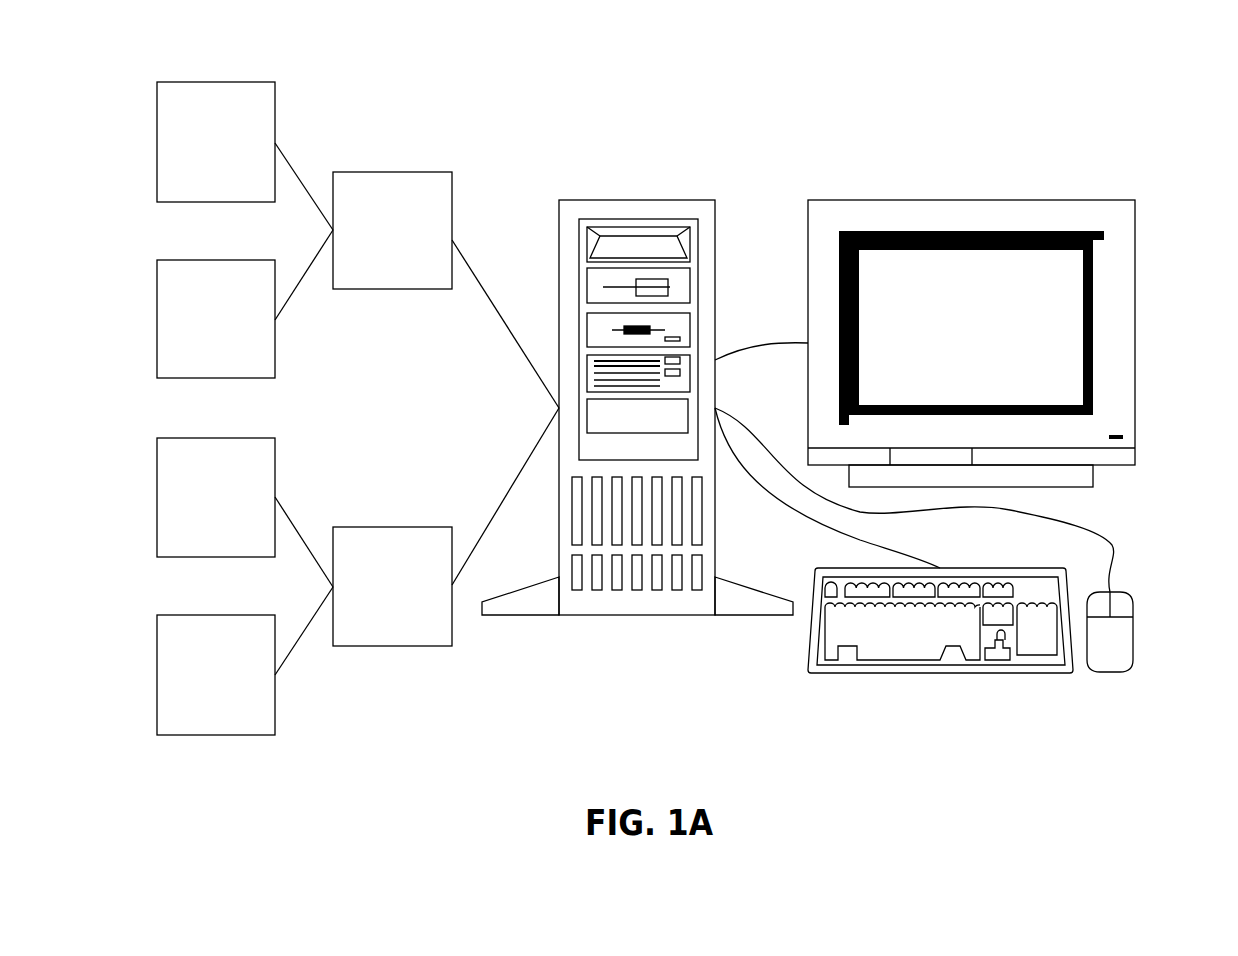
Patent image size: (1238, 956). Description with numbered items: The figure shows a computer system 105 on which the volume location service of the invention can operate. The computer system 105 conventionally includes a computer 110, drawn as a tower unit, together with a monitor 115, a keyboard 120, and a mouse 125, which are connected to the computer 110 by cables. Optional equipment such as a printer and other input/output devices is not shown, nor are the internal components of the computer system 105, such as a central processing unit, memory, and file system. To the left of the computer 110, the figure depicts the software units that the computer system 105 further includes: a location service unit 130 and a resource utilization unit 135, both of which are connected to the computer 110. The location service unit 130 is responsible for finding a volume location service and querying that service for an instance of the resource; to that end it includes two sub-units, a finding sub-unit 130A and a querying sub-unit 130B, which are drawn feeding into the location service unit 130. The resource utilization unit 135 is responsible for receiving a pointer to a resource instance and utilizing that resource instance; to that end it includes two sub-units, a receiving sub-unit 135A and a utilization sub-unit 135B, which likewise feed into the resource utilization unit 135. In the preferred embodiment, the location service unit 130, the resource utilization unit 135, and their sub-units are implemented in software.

The computer system 105 is at (593, 118).
The computer 110 is at (678, 200).
The monitor 115 is at (925, 200).
The keyboard 120 is at (925, 673).
The mouse 125 is at (1135, 625).
The location service unit 130 is at (393, 172).
The finding sub-unit 130A is at (218, 82).
The querying sub-unit 130B is at (218, 260).
The resource utilization unit 135 is at (393, 527).
The receiving sub-unit 135A is at (218, 438).
The utilization sub-unit 135B is at (218, 615).